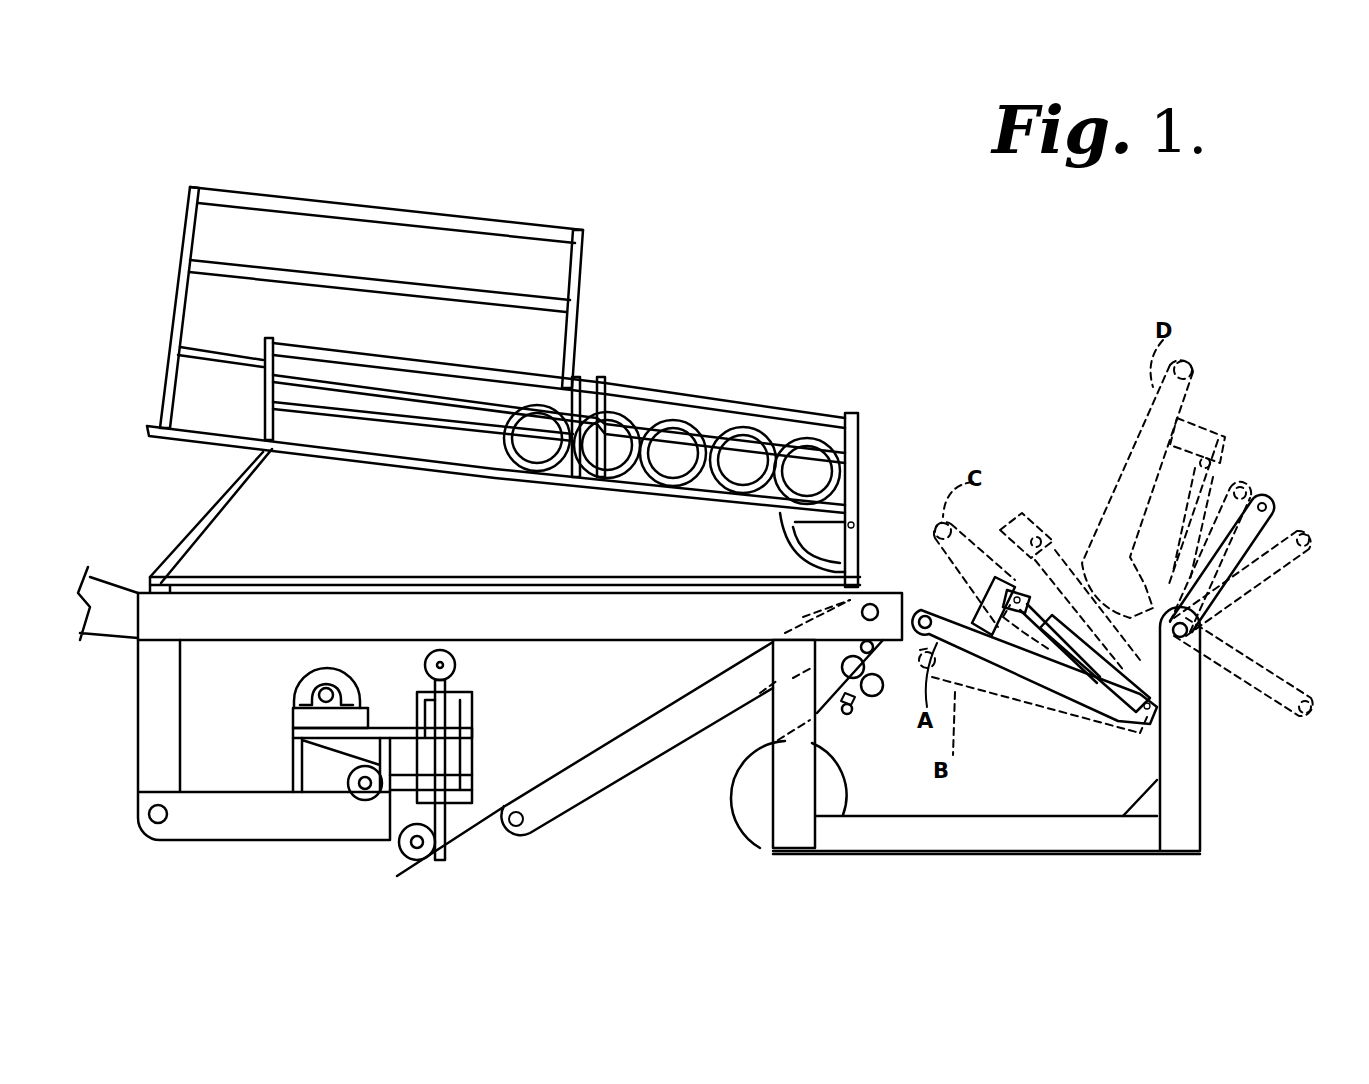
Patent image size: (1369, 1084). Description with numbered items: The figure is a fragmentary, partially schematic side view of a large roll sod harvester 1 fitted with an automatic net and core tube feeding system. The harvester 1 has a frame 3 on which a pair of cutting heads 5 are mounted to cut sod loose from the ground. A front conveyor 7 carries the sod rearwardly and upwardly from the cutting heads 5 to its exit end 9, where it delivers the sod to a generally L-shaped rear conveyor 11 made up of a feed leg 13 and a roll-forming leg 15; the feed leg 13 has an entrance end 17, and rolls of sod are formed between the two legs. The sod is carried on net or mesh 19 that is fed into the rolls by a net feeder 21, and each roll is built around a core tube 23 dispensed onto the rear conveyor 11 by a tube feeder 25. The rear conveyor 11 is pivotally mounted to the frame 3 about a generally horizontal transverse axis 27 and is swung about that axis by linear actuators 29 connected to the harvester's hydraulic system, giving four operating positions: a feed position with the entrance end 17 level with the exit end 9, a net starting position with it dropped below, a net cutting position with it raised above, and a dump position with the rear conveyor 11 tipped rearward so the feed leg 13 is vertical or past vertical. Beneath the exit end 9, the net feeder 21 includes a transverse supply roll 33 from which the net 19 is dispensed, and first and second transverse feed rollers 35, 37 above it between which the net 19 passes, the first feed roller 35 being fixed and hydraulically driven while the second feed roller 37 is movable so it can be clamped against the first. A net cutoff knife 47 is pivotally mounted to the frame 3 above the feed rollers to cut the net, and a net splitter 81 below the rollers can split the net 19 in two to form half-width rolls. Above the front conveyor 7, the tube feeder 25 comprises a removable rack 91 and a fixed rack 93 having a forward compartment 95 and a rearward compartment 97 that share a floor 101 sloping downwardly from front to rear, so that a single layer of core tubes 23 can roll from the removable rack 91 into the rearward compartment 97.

The large roll sod harvester 1 is at (919, 294).
The frame 3 is at (933, 832).
The cutting heads 5 is at (473, 727).
The front conveyor 7 is at (680, 747).
The exit end 9 is at (872, 602).
The rear conveyor 11 is at (1025, 692).
The feed leg 13 is at (982, 673).
The roll-forming leg 15 is at (1263, 493).
The entrance end 17 is at (923, 612).
The net or mesh 19 is at (832, 713).
The net feeder 21 is at (902, 720).
The core tube 23 is at (745, 427).
The tube feeder 25 is at (857, 502).
The transverse axis 27 is at (1205, 630).
The linear actuators 29 is at (1100, 677).
The supply roll 33 is at (735, 816).
The first feed roller 35 is at (880, 690).
The second feed roller 37 is at (845, 663).
The net cutoff knife 47 is at (865, 633).
The net splitter 81 is at (860, 712).
The removable rack 91 is at (348, 204).
The fixed rack 93 is at (637, 380).
The forward compartment 95 is at (702, 392).
The rearward compartment 97 is at (370, 350).
The floor 101 is at (360, 463).